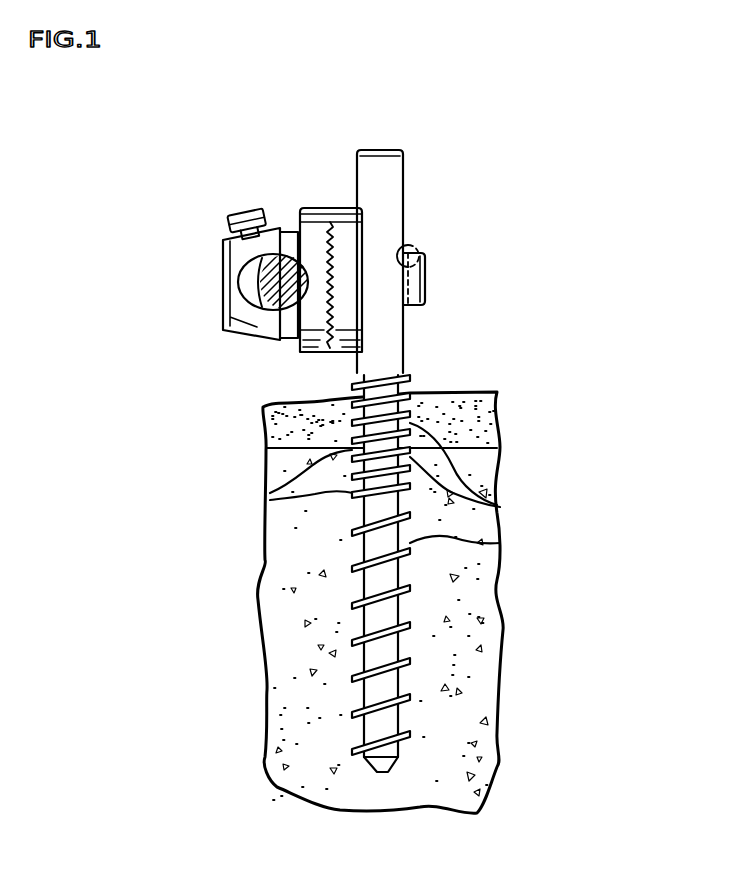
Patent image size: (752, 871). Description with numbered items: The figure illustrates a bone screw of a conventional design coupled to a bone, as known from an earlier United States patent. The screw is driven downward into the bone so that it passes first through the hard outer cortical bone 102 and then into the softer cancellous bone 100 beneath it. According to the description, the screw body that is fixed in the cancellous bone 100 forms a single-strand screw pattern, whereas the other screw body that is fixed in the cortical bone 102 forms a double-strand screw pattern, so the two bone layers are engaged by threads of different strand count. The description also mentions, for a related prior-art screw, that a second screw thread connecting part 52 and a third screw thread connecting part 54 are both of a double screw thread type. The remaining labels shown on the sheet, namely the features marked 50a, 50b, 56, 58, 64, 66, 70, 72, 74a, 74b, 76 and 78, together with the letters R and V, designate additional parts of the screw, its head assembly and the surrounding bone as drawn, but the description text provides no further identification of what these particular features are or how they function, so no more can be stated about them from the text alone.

The distal end of bone screw 50a is at (433, 763).
The proximal end of bone screw 50b is at (310, 393).
The second screw thread connecting part 52 is at (322, 620).
The third screw thread connecting part 54 is at (426, 194).
The screw tip 56 is at (370, 765).
The post 58 is at (404, 227).
The fracture lines 64 is at (277, 495).
The bone fragment 66 is at (490, 508).
The locking nut 70 is at (316, 183).
The pivot pin 72 is at (425, 297).
The clamp pin bore 74a is at (419, 257).
The rod receiving opening 74b is at (245, 288).
The threads 76 is at (330, 210).
The set screw 78 is at (237, 215).
The cancellous bone 100 is at (484, 594).
The cortical bone 102 is at (494, 423).
The rod R is at (257, 303).
The vertebra V is at (240, 545).